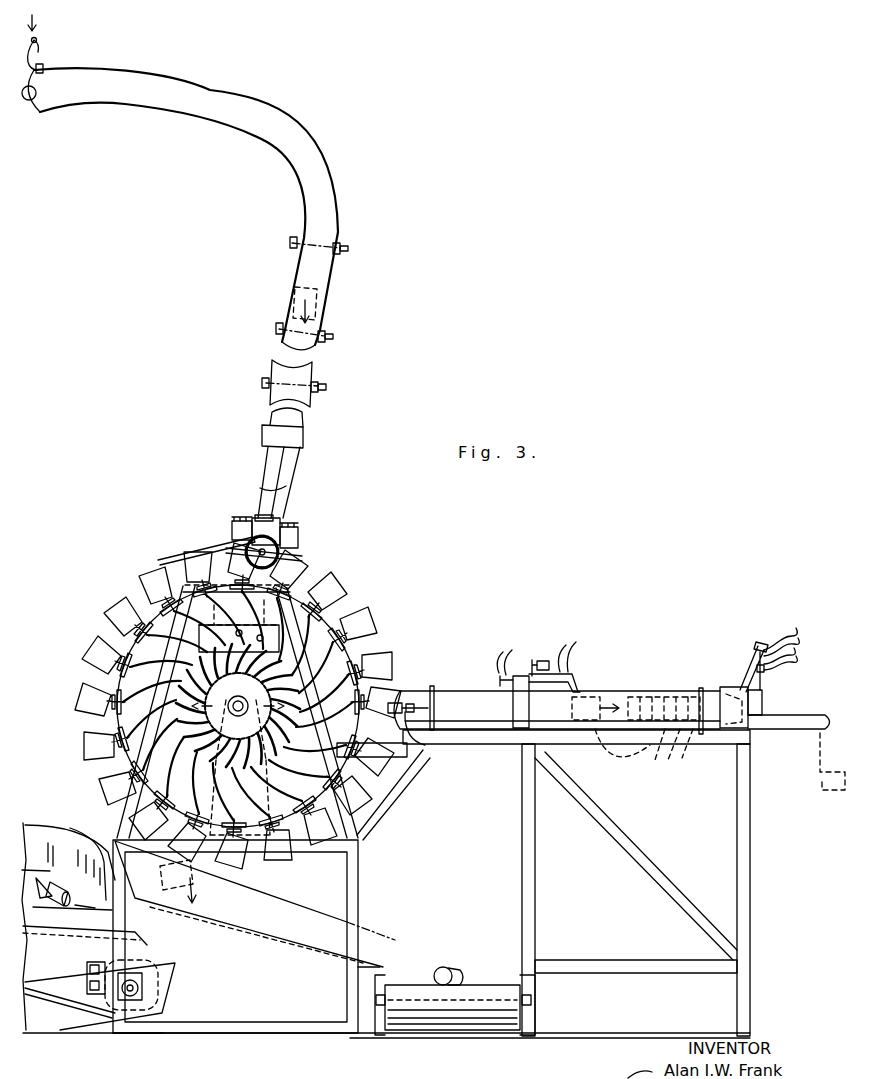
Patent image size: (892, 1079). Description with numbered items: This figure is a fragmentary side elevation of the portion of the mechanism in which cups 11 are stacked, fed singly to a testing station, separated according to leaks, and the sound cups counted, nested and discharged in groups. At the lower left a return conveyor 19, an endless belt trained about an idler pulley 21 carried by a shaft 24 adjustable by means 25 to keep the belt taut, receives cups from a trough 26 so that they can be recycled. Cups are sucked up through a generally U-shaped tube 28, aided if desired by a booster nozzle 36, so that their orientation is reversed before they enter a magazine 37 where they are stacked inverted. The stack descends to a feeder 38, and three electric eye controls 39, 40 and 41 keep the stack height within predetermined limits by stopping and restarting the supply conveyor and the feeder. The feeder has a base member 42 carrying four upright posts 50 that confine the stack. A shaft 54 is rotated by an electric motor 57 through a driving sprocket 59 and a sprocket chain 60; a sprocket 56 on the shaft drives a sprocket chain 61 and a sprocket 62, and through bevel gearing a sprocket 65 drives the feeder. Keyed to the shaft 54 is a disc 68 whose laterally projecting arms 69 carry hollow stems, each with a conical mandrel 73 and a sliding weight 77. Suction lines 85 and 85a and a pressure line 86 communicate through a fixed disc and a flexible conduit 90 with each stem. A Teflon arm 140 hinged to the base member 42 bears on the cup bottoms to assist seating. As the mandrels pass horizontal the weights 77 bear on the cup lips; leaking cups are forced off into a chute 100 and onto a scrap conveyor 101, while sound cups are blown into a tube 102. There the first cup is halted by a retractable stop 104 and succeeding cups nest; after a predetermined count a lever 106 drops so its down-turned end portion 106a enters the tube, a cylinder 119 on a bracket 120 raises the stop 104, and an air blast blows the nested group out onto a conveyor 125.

The cup 11 is at (328, 295).
The return conveyor 19 is at (64, 967).
The idler pulley 21 is at (153, 990).
The shaft 24 is at (125, 992).
The adjustment means 25 is at (85, 975).
The trough 26 is at (42, 858).
The tube 28 is at (163, 105).
The booster nozzle 36 is at (52, 72).
The magazine 37 is at (300, 434).
The feeder 38 is at (309, 539).
The electric eye control 39 is at (349, 248).
The electric eye control 40 is at (338, 338).
The electric eye control 41 is at (328, 391).
The base member 42 is at (233, 530).
The posts 50 is at (294, 479).
The shaft 54 is at (124, 724).
The sprocket 56 is at (178, 766).
The electric motor 57 is at (258, 838).
The driving sprocket 59 is at (218, 865).
The sprocket chain 60 is at (215, 781).
The sprocket chain 61 is at (232, 635).
The sprocket 62 is at (298, 553).
The sprocket 65 is at (268, 518).
The disc 68 is at (116, 690).
The arms 69 is at (125, 639).
The mandrel 73 is at (325, 600).
The weight 77 is at (108, 738).
The suction line 85 is at (178, 695).
The suction line 85a is at (330, 640).
The pressure line 86 is at (345, 681).
The flexible conduit 90 is at (317, 789).
The chute 100 is at (238, 905).
The scrap conveyor 101 is at (408, 985).
The tube 102 is at (465, 718).
The retractable stop 104 is at (762, 704).
The lever 106 is at (548, 664).
The down-turned end portion 106a is at (568, 678).
The cylinder 119 is at (792, 636).
The bracket 120 is at (746, 683).
The conveyor 125 is at (818, 772).
The arm 140 is at (199, 553).